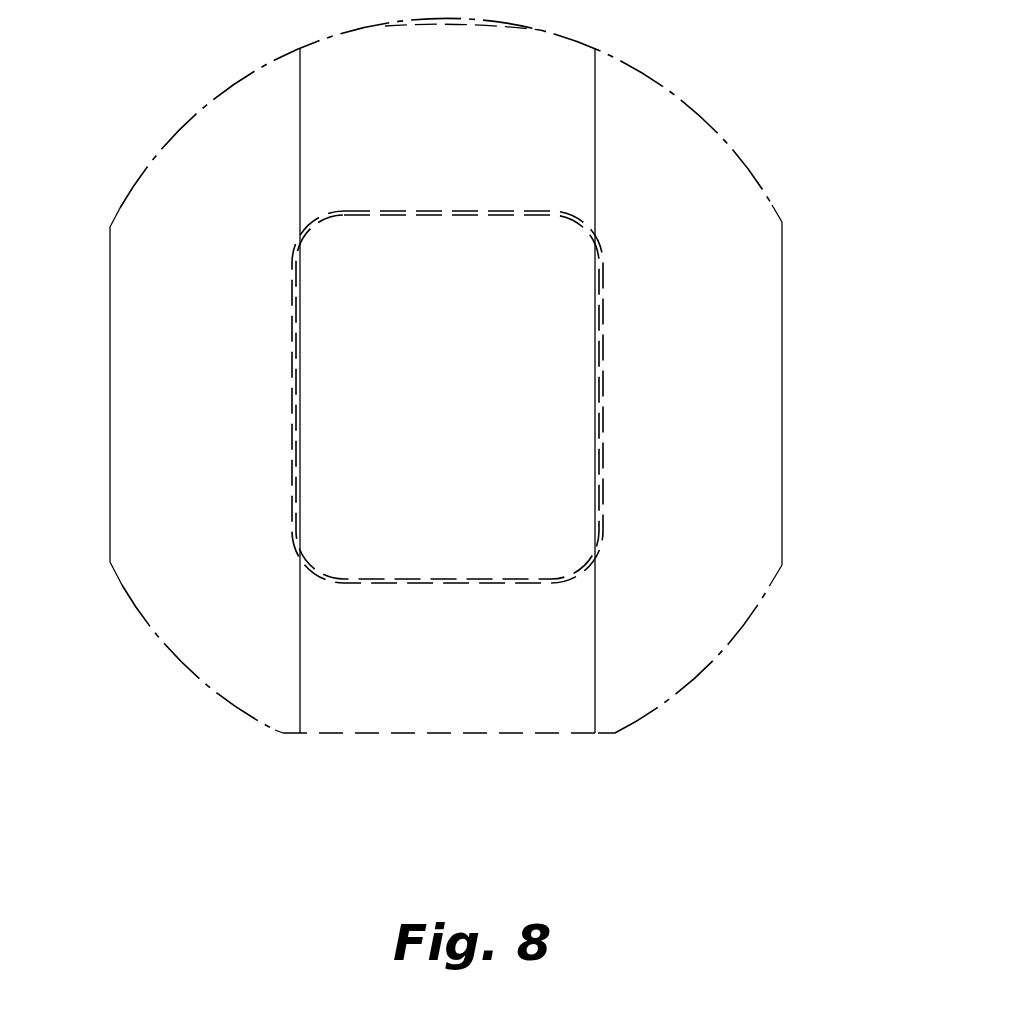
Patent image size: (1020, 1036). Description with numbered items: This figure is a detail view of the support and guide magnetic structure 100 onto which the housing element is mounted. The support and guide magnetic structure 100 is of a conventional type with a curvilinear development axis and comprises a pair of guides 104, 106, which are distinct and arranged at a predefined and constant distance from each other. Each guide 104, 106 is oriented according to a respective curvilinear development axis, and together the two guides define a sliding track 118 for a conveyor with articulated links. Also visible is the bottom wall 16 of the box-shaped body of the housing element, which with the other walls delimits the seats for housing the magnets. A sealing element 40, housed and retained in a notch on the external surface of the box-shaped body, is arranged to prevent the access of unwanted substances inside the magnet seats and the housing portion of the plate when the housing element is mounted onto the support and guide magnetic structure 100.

The support and guide magnetic structure 100 is at (828, 292).
The guide 104 is at (145, 368).
The guide 106 is at (761, 367).
The sliding track 118 is at (337, 684).
The sealing element 40 is at (407, 587).
The bottom wall 16 is at (465, 548).